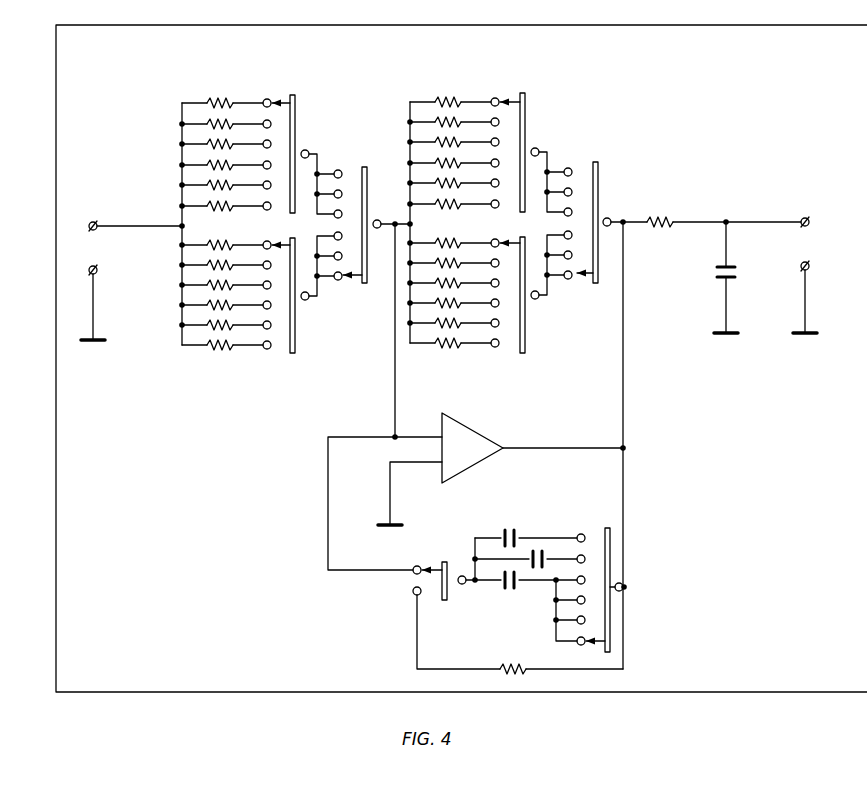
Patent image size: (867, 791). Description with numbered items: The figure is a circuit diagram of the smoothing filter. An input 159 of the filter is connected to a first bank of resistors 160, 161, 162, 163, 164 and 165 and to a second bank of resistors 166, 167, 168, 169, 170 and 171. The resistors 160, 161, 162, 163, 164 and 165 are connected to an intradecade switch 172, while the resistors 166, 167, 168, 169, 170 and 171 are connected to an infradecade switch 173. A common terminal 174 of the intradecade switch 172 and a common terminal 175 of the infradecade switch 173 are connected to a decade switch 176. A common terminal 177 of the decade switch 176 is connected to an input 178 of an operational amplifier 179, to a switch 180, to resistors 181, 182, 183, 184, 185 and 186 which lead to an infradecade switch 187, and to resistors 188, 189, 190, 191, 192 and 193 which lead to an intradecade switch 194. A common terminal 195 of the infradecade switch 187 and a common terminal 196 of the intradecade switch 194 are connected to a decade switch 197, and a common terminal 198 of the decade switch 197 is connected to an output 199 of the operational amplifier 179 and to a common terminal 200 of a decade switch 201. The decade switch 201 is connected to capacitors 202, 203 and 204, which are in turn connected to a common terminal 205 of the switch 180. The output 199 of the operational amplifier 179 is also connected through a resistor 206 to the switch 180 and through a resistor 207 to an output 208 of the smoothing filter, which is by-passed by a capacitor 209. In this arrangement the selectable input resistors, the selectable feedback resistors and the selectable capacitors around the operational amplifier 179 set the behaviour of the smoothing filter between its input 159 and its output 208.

The input 159 is at (97, 233).
The resistor 160 is at (208, 100).
The resistor 161 is at (205, 121).
The resistor 162 is at (205, 142).
The resistor 163 is at (205, 163).
The resistor 164 is at (205, 184).
The resistor 165 is at (205, 205).
The resistor 166 is at (205, 246).
The resistor 167 is at (205, 266).
The resistor 168 is at (205, 287).
The resistor 169 is at (205, 307).
The resistor 170 is at (205, 330).
The resistor 171 is at (220, 348).
The intradecade switch 172 is at (292, 94).
The infradecade switch 173 is at (290, 356).
The common terminal 174 is at (308, 150).
The common terminal 175 is at (306, 300).
The decade switch 176 is at (362, 168).
The common terminal 177 is at (388, 208).
The input 178 is at (418, 436).
The operational amplifier 179 is at (443, 480).
The switch 180 is at (444, 602).
The resistor 181 is at (446, 100).
The resistor 182 is at (433, 121).
The resistor 183 is at (433, 142).
The resistor 184 is at (433, 163).
The resistor 185 is at (433, 183).
The resistor 186 is at (448, 206).
The infradecade switch 187 is at (528, 93).
The resistor 188 is at (448, 247).
The resistor 189 is at (446, 267).
The resistor 190 is at (444, 287).
The resistor 191 is at (440, 307).
The resistor 192 is at (447, 330).
The resistor 193 is at (458, 348).
The intradecade switch 194 is at (527, 356).
The common terminal 195 is at (540, 150).
The common terminal 196 is at (540, 300).
The decade switch 197 is at (600, 163).
The common terminal 198 is at (612, 217).
The output 199 is at (518, 452).
The common terminal 200 is at (623, 590).
The decade switch 201 is at (605, 527).
The capacitor 202 is at (510, 530).
The capacitor 203 is at (545, 548).
The capacitor 204 is at (512, 588).
The common terminal 205 is at (460, 575).
The resistor 206 is at (510, 668).
The resistor 207 is at (680, 219).
The output 208 is at (810, 265).
The capacitor 209 is at (718, 273).